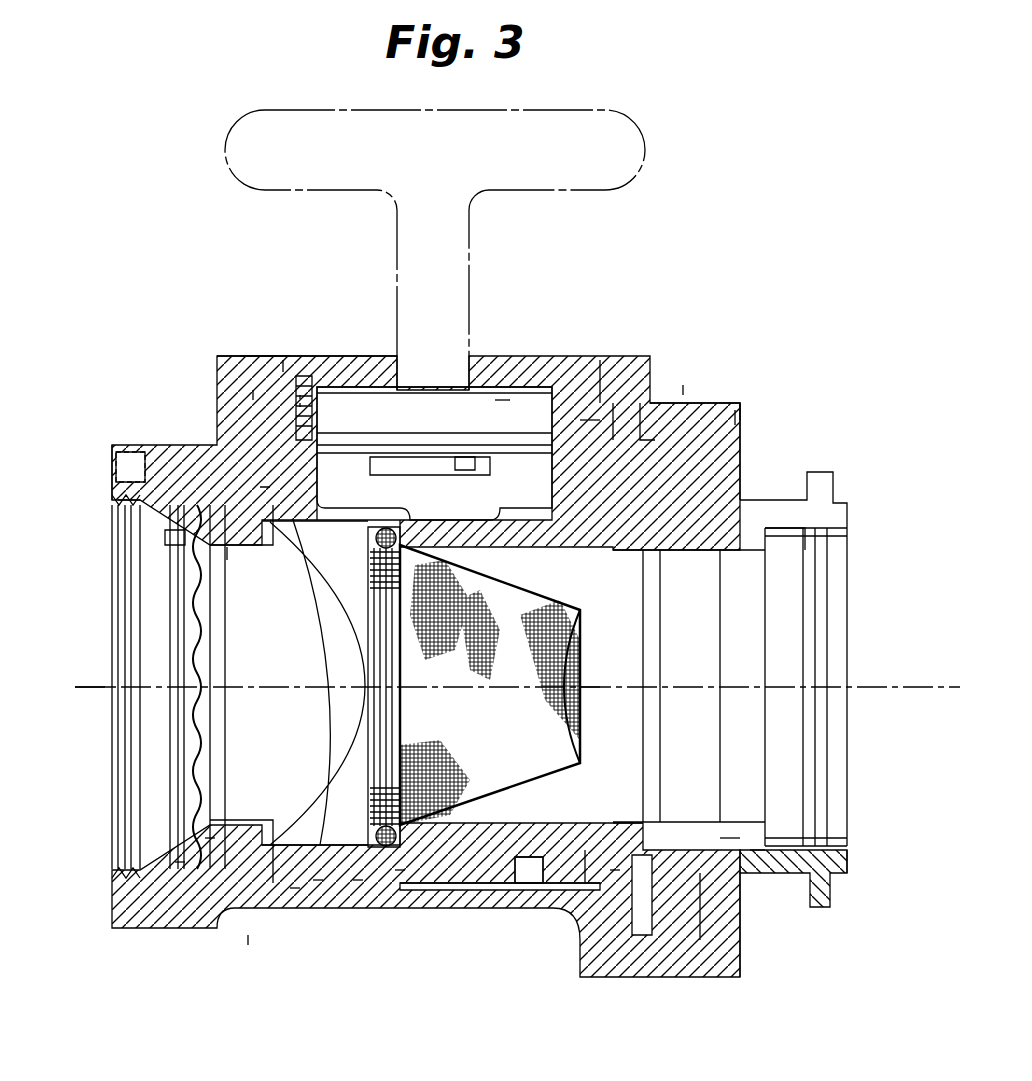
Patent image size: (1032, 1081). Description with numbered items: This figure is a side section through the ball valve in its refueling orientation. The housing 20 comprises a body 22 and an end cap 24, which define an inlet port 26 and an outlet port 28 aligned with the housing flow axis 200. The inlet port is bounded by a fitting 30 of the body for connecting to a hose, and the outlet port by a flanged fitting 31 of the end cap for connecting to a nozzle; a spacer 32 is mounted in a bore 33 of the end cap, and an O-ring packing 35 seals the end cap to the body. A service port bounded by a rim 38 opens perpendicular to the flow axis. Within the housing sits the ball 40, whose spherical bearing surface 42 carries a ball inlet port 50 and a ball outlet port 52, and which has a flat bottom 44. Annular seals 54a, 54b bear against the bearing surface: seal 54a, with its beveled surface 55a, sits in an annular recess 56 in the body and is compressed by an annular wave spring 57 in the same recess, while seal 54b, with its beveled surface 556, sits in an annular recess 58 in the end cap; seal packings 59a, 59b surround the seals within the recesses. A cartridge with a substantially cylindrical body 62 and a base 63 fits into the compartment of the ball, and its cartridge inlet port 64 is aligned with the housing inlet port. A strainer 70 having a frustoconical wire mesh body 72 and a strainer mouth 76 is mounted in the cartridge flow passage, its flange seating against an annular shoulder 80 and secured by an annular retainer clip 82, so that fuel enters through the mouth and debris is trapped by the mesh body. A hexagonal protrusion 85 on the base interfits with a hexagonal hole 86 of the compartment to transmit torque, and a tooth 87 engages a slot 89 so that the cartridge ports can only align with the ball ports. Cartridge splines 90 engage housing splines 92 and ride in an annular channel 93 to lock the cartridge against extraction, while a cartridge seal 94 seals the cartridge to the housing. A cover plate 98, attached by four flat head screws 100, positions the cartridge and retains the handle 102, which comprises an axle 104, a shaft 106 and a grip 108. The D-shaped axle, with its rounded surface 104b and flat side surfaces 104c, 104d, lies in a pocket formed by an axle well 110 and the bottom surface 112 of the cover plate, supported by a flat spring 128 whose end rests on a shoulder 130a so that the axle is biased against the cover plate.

The housing 20 is at (248, 935).
The housing body 22 is at (243, 910).
The end cap 24 is at (730, 930).
The inlet port 26 is at (187, 723).
The outlet port 28 is at (725, 637).
The fitting 30 is at (113, 837).
The flanged fitting 31 is at (823, 910).
The spacer 32 is at (700, 500).
The bore 33 is at (740, 457).
The O-ring packing 35 is at (715, 392).
The rim 38 is at (240, 358).
The ball 40 is at (290, 888).
The spherical bearing surface 42 is at (610, 877).
The flat bottom 44 is at (313, 880).
The ball inlet port 50 is at (222, 598).
The ball outlet port 52 is at (620, 818).
The annular seal 54a is at (137, 507).
The annular seal 54b is at (723, 838).
The beveled surface 55a is at (180, 547).
The outlet seal 556 is at (650, 605).
The annular recess 56 is at (175, 862).
The annular wave spring 57 is at (205, 838).
The annular recess 58 is at (712, 903).
The seal packing 59a is at (175, 465).
The seal packing 59b is at (757, 850).
The cartridge body 62 is at (620, 360).
The base 63 is at (465, 877).
The cartridge inlet port 64 is at (288, 575).
The strainer 70 is at (600, 672).
The frustoconical wire mesh body 72 is at (490, 692).
The strainer mouth 76 is at (420, 715).
The annular shoulder 80 is at (373, 860).
The annular retainer clip 82 is at (368, 787).
The hexagonal protrusion 85 is at (395, 870).
The hexagonal hole 86 is at (353, 880).
The tooth 87 is at (563, 877).
The slot 89 is at (525, 878).
The cartridge splines 90 is at (253, 390).
The housing splines 92 is at (283, 362).
The annular channel 93 is at (260, 487).
The cartridge seal 94 is at (227, 547).
The cover plate 98 is at (262, 365).
The flat head screws 100 is at (303, 395).
The handle 102 is at (474, 231).
The axle 104 is at (535, 408).
The rounded surface 104b is at (503, 407).
The side surface 104c is at (590, 420).
The side surface 104d is at (510, 470).
The shaft 106 is at (470, 235).
The grip 108 is at (655, 135).
The axle well 110 is at (340, 470).
The bottom surface 112 is at (313, 385).
The flat spring 128 is at (463, 458).
The shoulder 130a is at (372, 476).
The housing flow axis 200 is at (96, 682).